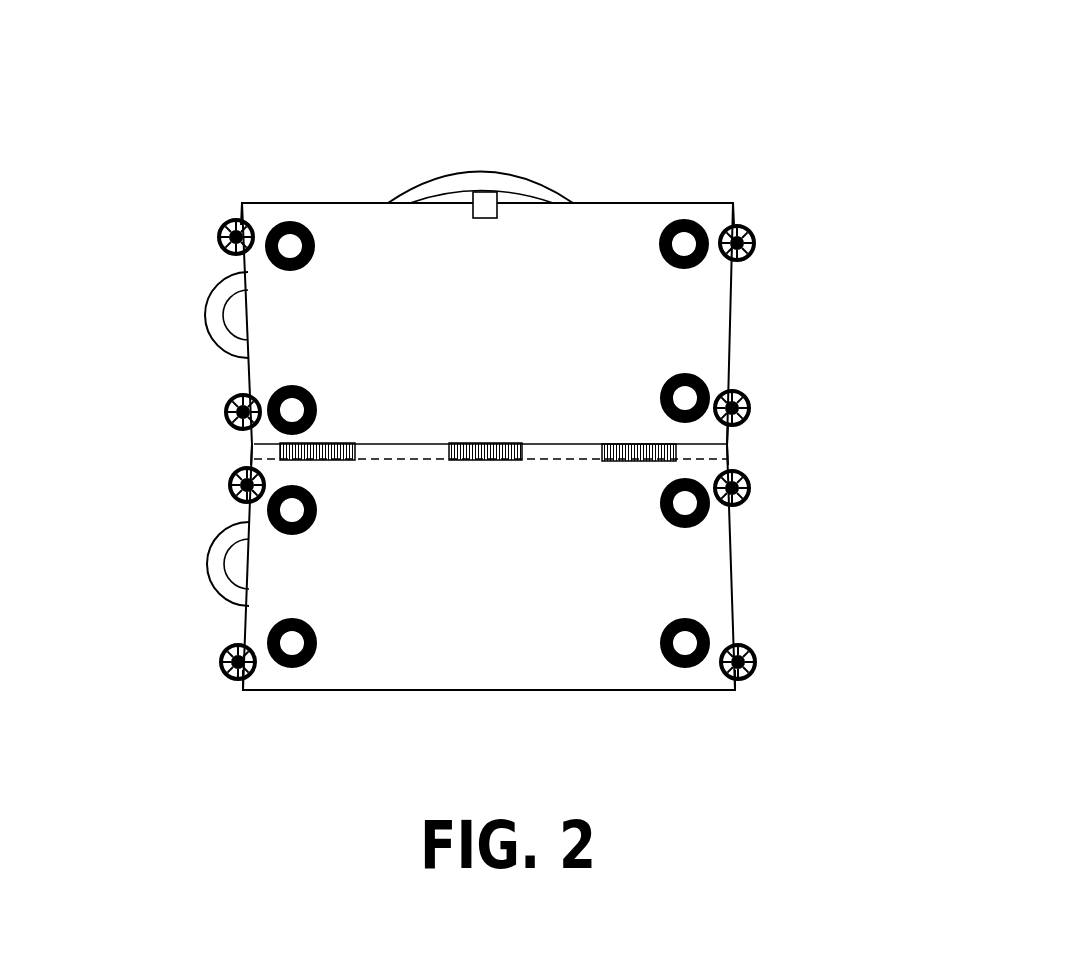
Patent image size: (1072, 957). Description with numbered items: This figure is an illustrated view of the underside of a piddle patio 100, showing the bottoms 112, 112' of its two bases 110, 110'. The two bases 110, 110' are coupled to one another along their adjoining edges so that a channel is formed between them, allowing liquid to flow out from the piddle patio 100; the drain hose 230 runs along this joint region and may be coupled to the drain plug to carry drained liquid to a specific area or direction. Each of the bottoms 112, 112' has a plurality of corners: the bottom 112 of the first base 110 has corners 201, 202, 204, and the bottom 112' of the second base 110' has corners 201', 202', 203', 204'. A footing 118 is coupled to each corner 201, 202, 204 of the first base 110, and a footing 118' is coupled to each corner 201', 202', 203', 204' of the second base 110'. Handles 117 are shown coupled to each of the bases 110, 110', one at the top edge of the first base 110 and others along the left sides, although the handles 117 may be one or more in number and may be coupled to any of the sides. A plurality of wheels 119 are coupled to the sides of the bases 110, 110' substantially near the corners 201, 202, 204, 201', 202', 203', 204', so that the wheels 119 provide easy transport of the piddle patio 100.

The piddle patio 100 is at (500, 44).
The base 110 is at (655, 274).
The base 110' is at (642, 500).
The bottom 112 is at (800, 275).
The bottom 112' is at (792, 544).
The handle 117 is at (542, 176).
The footing 118 is at (486, 281).
The footing 118' is at (464, 562).
The wheel 119 is at (218, 236).
The corner 201 is at (755, 165).
The corner 201' is at (804, 442).
The corner 202 is at (801, 416).
The corner 202' is at (798, 656).
The corner 203' is at (158, 676).
The corner 204 is at (151, 163).
The corner 204' is at (142, 438).
The drain hose 230 is at (250, 444).